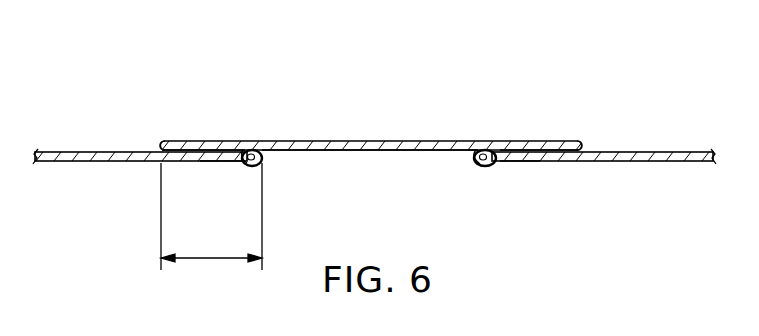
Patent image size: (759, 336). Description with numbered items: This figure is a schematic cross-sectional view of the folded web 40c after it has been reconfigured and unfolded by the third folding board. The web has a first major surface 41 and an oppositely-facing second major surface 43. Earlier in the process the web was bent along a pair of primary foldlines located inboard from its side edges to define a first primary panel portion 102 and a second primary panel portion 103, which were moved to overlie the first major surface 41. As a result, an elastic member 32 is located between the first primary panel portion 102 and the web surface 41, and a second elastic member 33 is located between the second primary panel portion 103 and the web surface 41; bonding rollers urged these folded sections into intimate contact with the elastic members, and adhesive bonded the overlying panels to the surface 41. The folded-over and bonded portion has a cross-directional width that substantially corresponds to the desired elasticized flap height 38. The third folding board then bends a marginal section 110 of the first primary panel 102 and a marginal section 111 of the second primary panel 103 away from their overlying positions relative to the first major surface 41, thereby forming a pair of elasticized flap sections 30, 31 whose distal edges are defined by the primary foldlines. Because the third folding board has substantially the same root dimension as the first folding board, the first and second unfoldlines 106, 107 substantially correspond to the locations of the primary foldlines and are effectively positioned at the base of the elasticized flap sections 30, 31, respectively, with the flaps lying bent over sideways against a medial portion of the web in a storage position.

The folded web 40c is at (424, 64).
The first major surface 41 is at (327, 140).
The second major surface 43 is at (366, 150).
The second unfoldline 107 is at (163, 146).
The first unfoldline 106 is at (582, 146).
The marginal section 111 is at (132, 163).
The marginal section 110 is at (640, 162).
The second primary panel portion 103 is at (168, 163).
The first primary panel portion 102 is at (550, 162).
The elasticized flap section 31 is at (213, 163).
The elasticized flap section 30 is at (522, 162).
The second elastic member 33 is at (262, 165).
The elastic member 32 is at (476, 163).
The elasticized flap height 38 is at (208, 260).